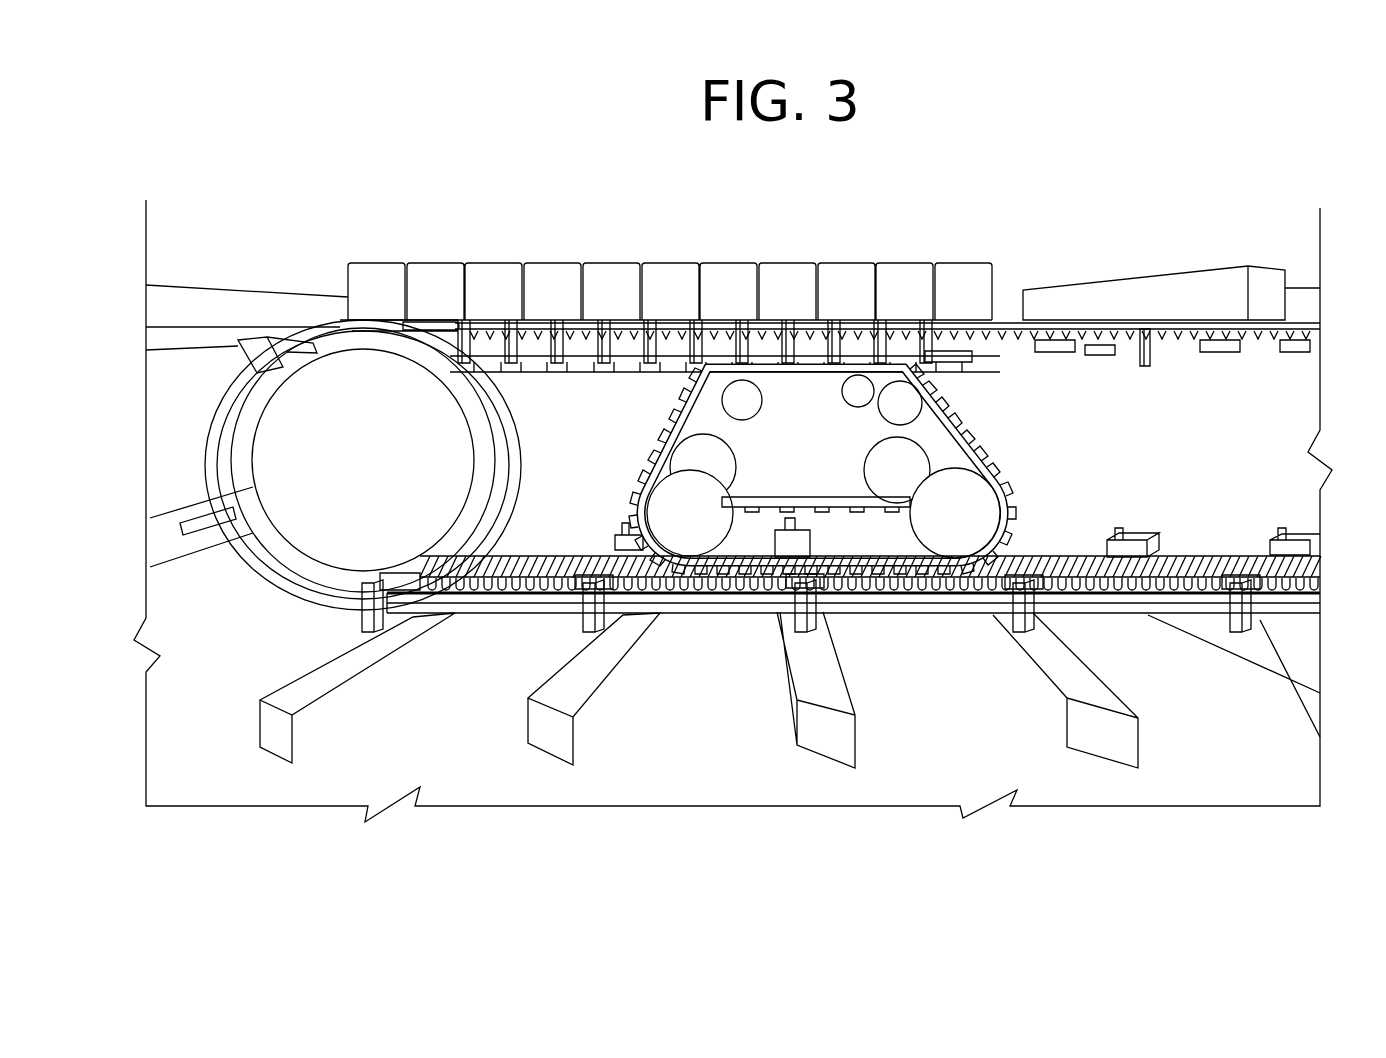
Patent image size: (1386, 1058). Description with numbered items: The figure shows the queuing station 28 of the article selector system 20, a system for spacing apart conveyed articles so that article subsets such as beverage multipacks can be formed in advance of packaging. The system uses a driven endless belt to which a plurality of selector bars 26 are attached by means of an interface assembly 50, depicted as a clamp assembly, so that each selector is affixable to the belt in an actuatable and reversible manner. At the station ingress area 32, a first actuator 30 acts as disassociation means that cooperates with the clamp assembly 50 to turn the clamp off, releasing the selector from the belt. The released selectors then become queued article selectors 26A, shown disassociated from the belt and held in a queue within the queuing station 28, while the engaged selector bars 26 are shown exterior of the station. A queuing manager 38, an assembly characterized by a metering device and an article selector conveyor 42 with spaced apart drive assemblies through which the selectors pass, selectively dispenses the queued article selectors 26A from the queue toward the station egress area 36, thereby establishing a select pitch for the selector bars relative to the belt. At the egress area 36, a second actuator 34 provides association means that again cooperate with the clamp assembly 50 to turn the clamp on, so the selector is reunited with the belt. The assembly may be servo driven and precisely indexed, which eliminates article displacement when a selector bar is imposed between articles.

The article selector system 20 is at (438, 163).
The queuing station 28 is at (330, 210).
The station ingress area 32 is at (318, 280).
The queued article selectors 26A is at (603, 256).
The station egress area 36 is at (1003, 255).
The first actuator 30 is at (412, 326).
The interface assembly 50 is at (614, 374).
The article selector conveyor 42 is at (663, 422).
The second actuator 34 is at (967, 368).
The queuing manager 38 is at (1033, 470).
The selector bars 26 is at (294, 668).